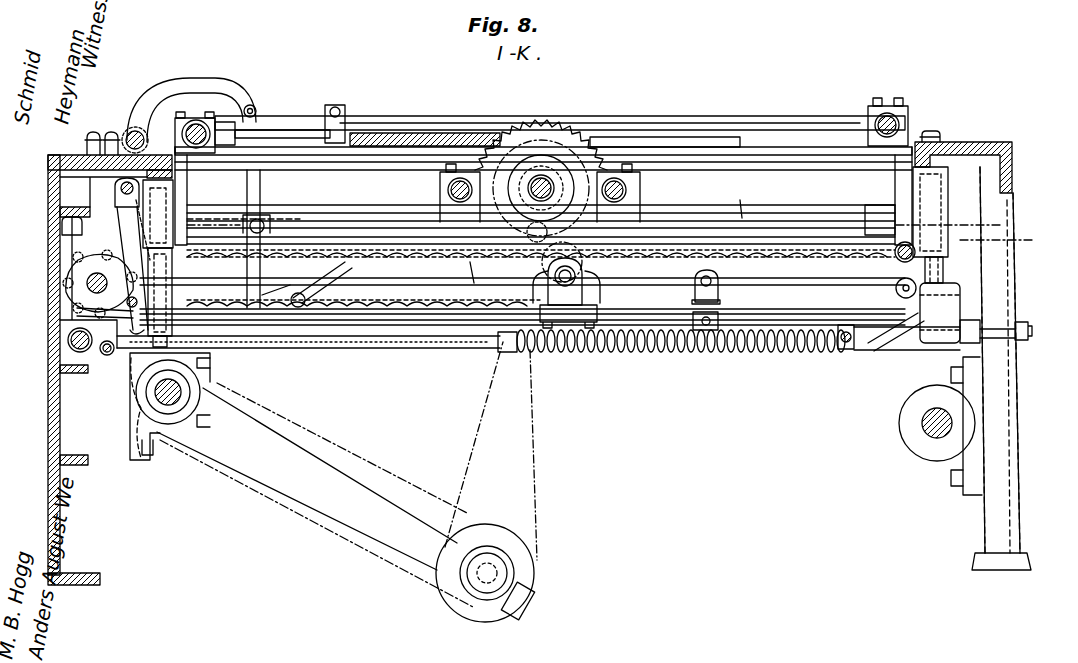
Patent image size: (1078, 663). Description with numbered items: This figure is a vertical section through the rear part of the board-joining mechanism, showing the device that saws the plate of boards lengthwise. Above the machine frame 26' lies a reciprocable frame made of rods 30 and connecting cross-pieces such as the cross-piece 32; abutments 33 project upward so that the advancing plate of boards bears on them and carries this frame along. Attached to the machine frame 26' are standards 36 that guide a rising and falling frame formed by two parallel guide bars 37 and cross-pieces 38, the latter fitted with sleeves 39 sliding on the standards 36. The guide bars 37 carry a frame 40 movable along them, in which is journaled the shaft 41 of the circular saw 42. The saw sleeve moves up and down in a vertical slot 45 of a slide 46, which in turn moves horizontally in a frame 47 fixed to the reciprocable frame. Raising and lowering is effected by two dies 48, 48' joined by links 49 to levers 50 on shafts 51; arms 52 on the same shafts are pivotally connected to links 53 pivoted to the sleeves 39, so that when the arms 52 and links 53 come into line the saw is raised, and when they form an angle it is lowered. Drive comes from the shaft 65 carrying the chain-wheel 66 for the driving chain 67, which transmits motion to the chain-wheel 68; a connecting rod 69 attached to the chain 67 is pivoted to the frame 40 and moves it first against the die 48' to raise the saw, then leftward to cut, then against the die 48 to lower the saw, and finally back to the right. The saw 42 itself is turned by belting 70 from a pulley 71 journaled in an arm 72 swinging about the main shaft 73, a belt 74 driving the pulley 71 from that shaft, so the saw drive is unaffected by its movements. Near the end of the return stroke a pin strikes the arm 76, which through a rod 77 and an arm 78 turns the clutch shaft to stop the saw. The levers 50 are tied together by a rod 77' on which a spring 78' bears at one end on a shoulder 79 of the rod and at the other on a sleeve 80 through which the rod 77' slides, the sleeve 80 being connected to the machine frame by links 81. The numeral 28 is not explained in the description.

The machine frame 26' is at (152, 331).
The worm screw 28 is at (415, 133).
The rods 30 is at (198, 122).
The cross-piece 32 is at (790, 130).
The abutments 33 is at (968, 137).
The standards 36 is at (178, 271).
The guide bars 37 is at (543, 227).
The cross-pieces 38 is at (175, 217).
The sleeves 39 is at (173, 193).
The frame 40 is at (440, 206).
The shaft 41 is at (536, 180).
The circular saw 42 is at (555, 124).
The vertical slot 45 is at (598, 270).
The slide 46 is at (640, 206).
The frame 47 is at (738, 198).
The die 48 is at (268, 209).
The die 48' is at (851, 205).
The links 49 is at (228, 227).
The levers 50 is at (70, 347).
The shafts 51 is at (77, 312).
The arms 52 is at (118, 256).
The links 53 is at (125, 220).
The shaft 65 is at (87, 285).
The chain-wheel 66 is at (80, 270).
The driving chain 67 is at (373, 281).
The chain-wheel 68 is at (588, 300).
The connecting rod 69 is at (408, 258).
The belting 70 is at (535, 417).
The pulley 71 is at (530, 556).
The arm 72 is at (313, 453).
The main shaft 73 is at (187, 387).
The belt 74 is at (430, 493).
The arm 76 is at (720, 296).
The rod 77 is at (522, 265).
The rod 77' is at (522, 343).
The arm 78 is at (260, 335).
The spring 78' is at (681, 360).
The shoulder 79 is at (503, 352).
The sleeve 80 is at (845, 350).
The links 81 is at (898, 352).